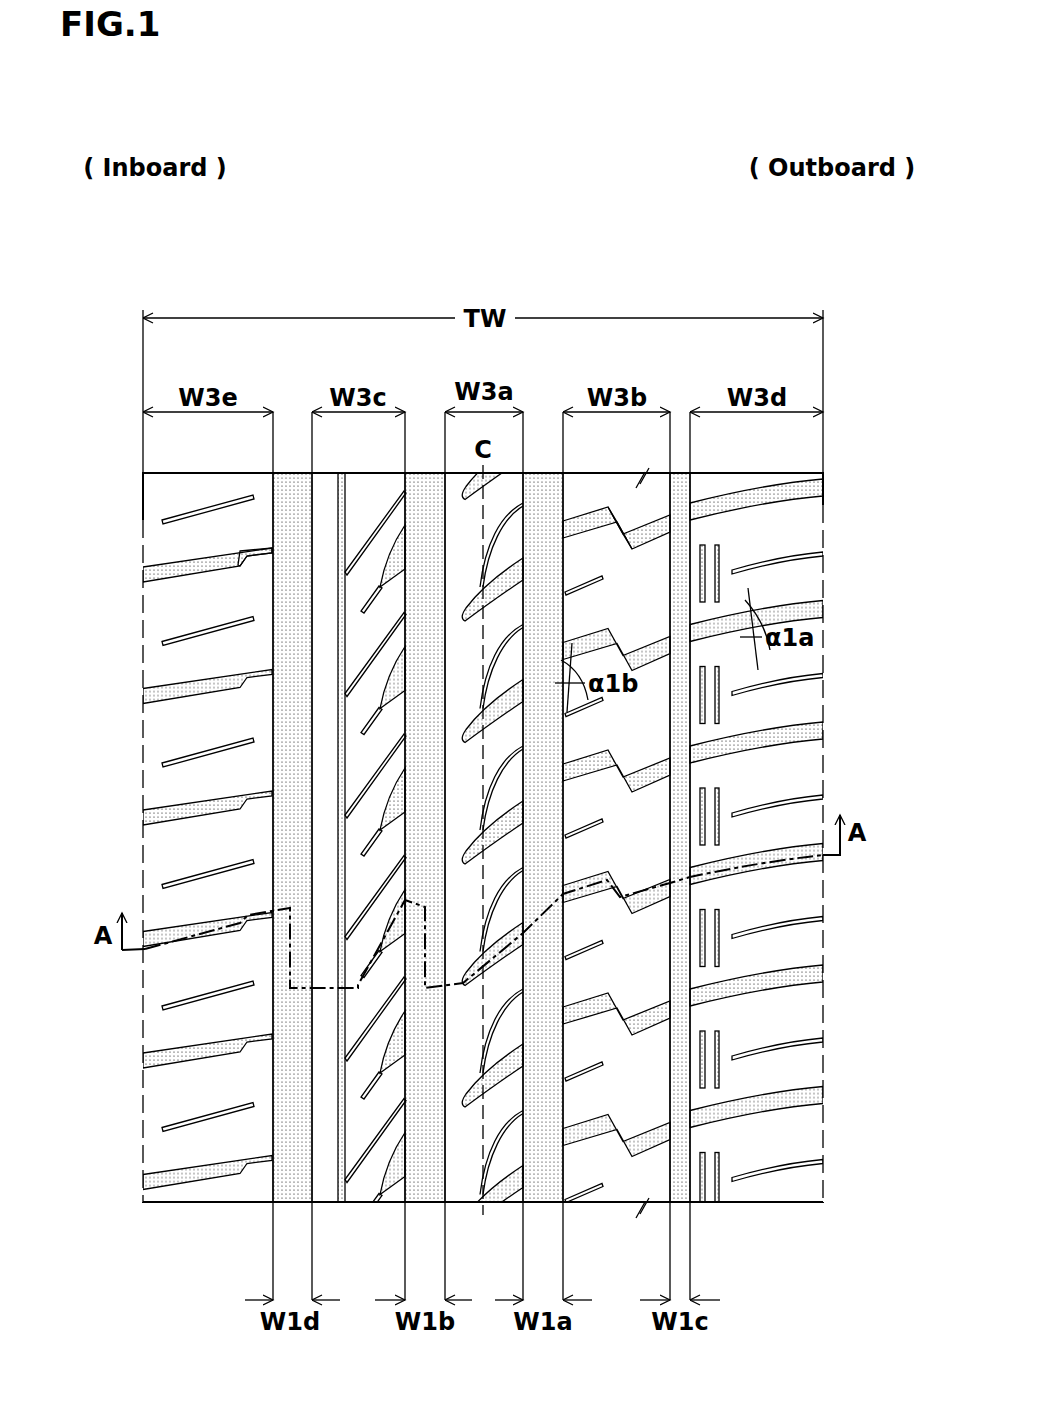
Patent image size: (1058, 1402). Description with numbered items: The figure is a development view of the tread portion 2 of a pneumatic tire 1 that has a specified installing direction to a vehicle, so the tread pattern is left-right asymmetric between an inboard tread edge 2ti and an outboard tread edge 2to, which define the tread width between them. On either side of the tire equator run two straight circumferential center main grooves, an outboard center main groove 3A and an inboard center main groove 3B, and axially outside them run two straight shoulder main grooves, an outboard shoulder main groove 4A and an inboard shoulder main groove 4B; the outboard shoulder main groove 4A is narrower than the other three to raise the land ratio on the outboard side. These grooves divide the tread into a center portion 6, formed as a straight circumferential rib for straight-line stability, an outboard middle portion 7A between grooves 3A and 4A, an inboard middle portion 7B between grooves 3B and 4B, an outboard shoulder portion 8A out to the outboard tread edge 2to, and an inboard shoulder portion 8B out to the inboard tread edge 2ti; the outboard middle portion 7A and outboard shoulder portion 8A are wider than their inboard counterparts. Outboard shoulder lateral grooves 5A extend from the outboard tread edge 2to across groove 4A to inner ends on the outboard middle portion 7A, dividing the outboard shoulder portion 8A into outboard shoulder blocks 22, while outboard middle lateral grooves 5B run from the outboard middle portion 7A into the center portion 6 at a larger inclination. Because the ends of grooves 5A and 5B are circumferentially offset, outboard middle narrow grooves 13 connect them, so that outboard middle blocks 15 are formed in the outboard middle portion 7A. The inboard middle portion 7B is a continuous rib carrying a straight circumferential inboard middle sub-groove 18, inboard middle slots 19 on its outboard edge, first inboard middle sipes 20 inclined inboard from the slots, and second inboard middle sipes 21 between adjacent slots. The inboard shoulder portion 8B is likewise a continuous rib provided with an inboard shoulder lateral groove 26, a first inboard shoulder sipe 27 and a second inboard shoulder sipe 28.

The pneumatic tire 1 is at (845, 302).
The tread portion 2 is at (835, 400).
The inboard tread edge 2ti is at (140, 510).
The outboard tread edge 2to is at (835, 500).
The outboard center main groove 3A is at (548, 512).
The inboard center main groove 3B is at (428, 512).
The outboard shoulder main groove 4A is at (682, 512).
The inboard shoulder main groove 4B is at (292, 512).
The outboard shoulder lateral groove 5A is at (780, 612).
The outboard middle lateral groove 5B is at (594, 645).
The center portion 6 is at (470, 1162).
The outboard middle portion 7A is at (623, 1160).
The inboard middle portion 7B is at (370, 1162).
The outboard shoulder portion 8A is at (772, 1143).
The inboard shoulder portion 8B is at (218, 1142).
The outboard middle narrow groove 13 is at (620, 1022).
The outboard middle block 15 is at (628, 760).
The inboard middle sub-groove 18 is at (333, 730).
The inboard middle slot 19 is at (390, 797).
The first inboard middle sipe 20 is at (363, 850).
The second inboard middle sipe 21 is at (385, 645).
The outboard shoulder block 22 is at (792, 536).
The inboard shoulder lateral groove 26 is at (203, 575).
The first inboard shoulder sipe 27 is at (258, 549).
The second inboard shoulder sipe 28 is at (212, 627).